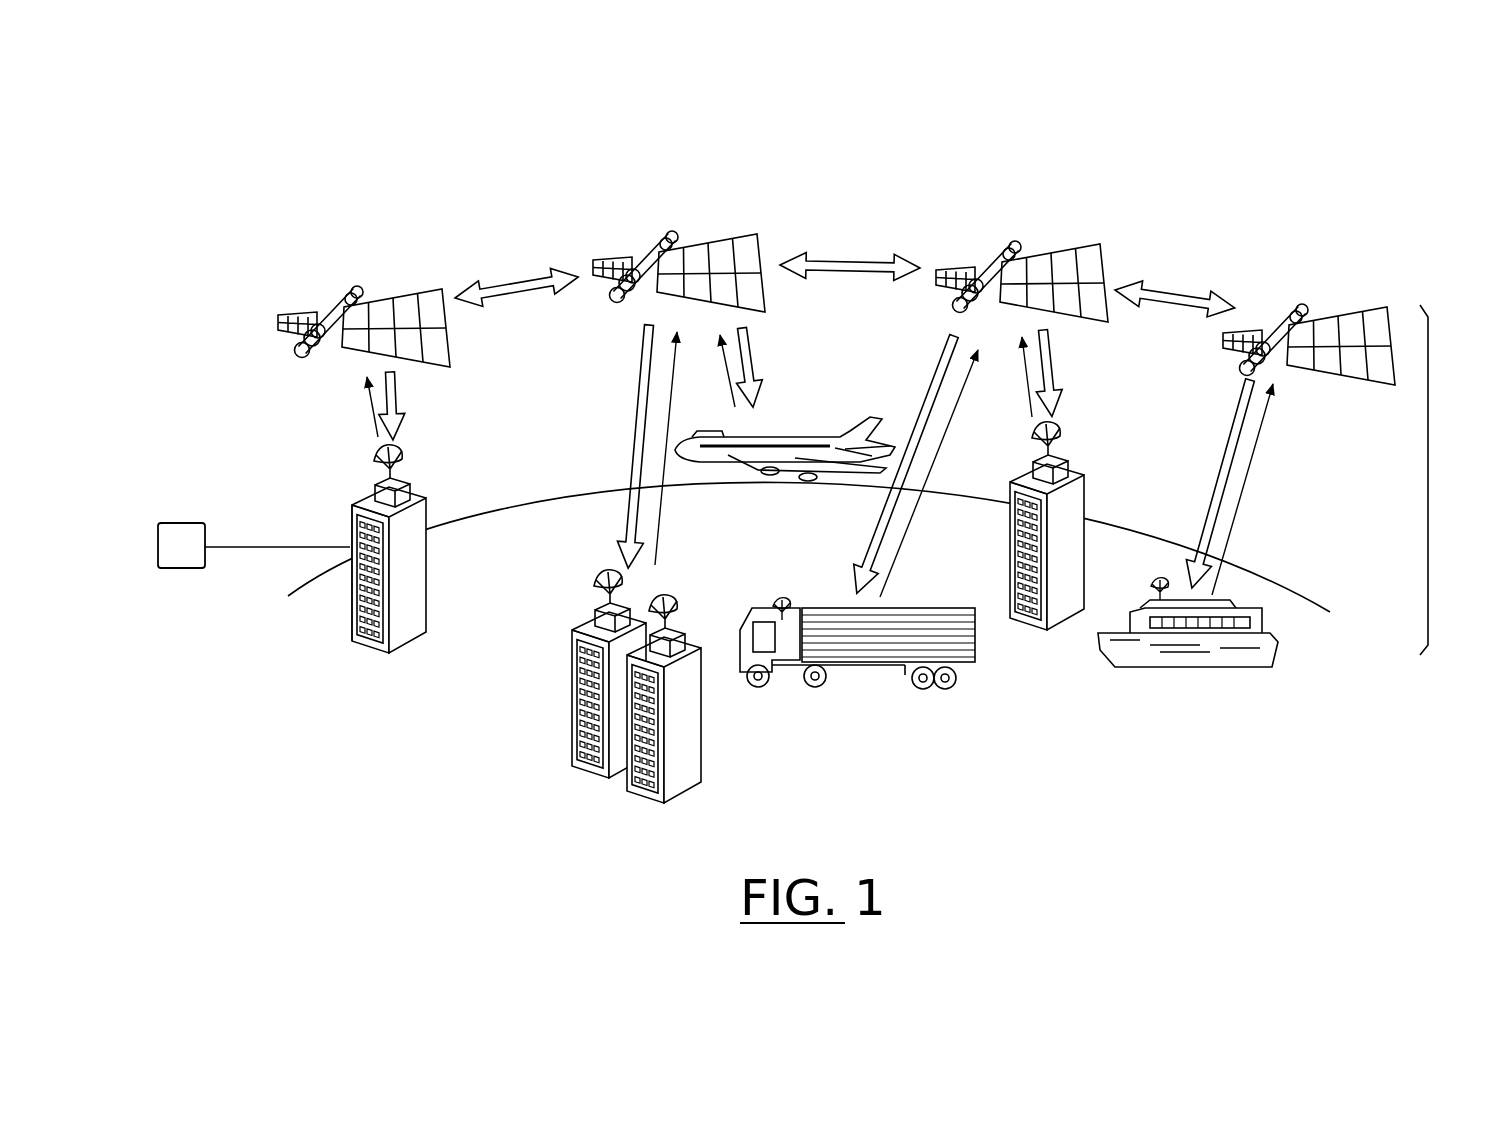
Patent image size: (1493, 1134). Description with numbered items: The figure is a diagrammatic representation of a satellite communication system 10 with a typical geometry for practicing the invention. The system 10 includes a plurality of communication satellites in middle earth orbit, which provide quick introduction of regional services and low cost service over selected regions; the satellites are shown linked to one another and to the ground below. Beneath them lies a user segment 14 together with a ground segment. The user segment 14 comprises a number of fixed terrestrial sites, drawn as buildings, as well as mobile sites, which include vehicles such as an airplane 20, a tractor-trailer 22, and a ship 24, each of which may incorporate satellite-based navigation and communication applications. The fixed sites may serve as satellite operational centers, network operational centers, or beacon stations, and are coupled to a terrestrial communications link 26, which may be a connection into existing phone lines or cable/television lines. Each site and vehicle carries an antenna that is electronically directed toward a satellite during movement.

The communication system 10 is at (1446, 480).
The user segment 14 is at (265, 621).
The airplane 20 is at (813, 438).
The tractor-trailer 22 is at (947, 607).
The ship 24 is at (1277, 632).
The terrestrial communications link 26 is at (193, 523).